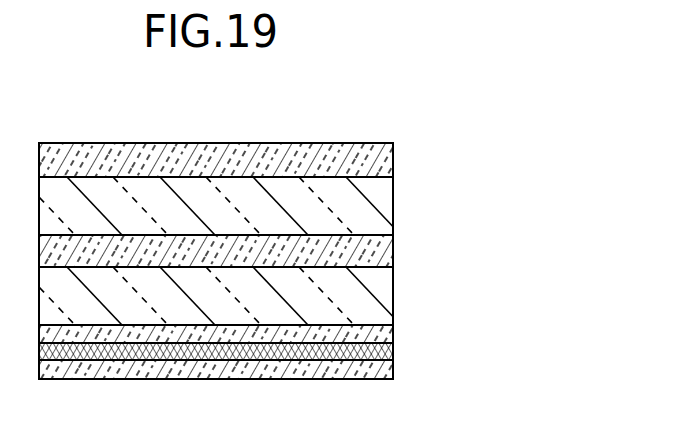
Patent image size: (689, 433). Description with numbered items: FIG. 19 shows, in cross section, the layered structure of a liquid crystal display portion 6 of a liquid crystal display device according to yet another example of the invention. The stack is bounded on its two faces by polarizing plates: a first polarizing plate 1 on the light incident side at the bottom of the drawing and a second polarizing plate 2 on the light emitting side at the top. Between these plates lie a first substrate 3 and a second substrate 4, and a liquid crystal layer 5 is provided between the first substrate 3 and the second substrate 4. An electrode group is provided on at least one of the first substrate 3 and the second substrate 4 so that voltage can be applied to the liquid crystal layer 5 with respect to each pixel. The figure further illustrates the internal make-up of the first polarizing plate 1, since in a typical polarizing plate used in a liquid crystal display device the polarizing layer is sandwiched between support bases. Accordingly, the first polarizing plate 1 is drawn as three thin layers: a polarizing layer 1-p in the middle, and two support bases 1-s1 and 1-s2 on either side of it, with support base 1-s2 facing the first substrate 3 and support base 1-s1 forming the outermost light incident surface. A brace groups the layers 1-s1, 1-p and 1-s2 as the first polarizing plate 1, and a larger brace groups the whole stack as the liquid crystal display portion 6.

The first polarizing plate 1 is at (303, 343).
The support base of the first polarizing plate 1-s1 is at (393, 367).
The polarizing layer of the first polarizing plate 1-p is at (393, 352).
The support base of the first polarizing plate 1-s2 is at (393, 330).
The second polarizing plate 2 is at (393, 158).
The first substrate 3 is at (393, 283).
The second substrate 4 is at (393, 203).
The liquid crystal layer 5 is at (393, 250).
The liquid crystal display portion 6 is at (319, 267).